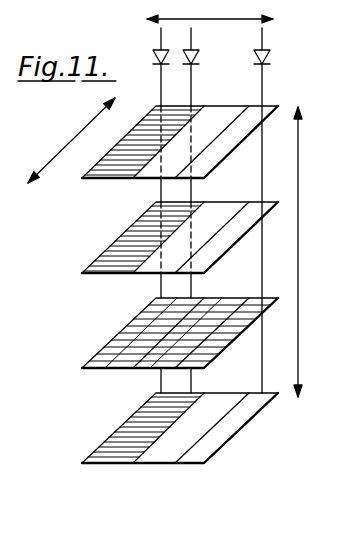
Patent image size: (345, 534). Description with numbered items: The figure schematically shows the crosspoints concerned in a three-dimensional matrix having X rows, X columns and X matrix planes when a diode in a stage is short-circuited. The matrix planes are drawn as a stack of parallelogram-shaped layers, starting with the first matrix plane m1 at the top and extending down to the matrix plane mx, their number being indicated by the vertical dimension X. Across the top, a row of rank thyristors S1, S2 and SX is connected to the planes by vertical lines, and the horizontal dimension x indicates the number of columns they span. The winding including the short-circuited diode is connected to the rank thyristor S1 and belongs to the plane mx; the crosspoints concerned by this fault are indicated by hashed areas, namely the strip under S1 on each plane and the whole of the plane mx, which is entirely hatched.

The rank thyristor S1 is at (157, 64).
The rank thyristor S2 is at (187, 64).
The rank thyristor SX is at (233, 75).
The matrix plane m1 is at (180, 142).
The matrix plane mx is at (136, 327).
The column dimension x is at (150, 91).
The matrix plane dimension X is at (306, 252).